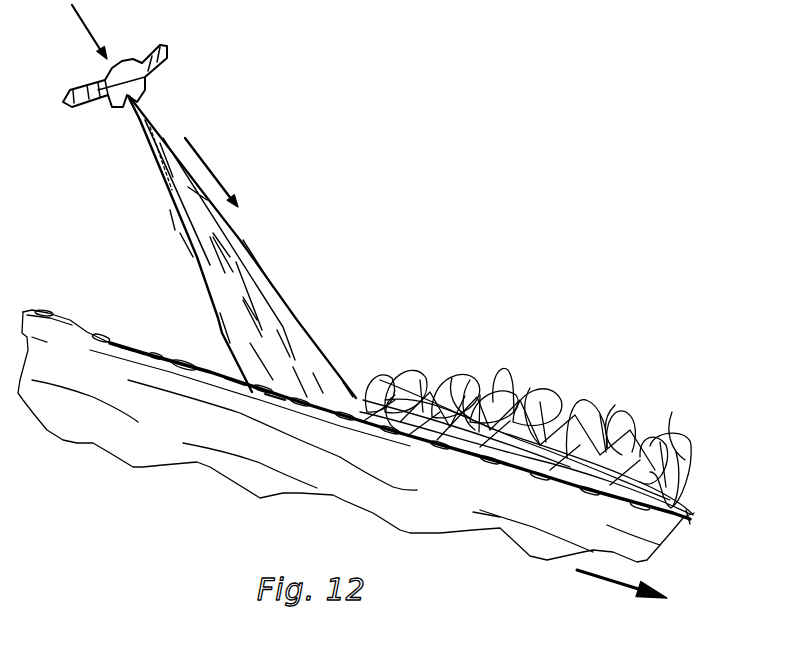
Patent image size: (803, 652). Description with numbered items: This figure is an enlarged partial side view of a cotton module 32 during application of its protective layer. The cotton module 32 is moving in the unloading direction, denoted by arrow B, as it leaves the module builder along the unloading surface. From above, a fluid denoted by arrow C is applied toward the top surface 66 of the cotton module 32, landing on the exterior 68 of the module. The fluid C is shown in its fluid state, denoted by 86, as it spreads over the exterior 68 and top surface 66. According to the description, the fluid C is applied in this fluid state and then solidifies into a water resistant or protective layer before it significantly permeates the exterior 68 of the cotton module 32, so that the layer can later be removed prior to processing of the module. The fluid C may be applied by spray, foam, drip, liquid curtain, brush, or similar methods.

The exterior 68 is at (133, 321).
The top surface 66 is at (198, 362).
The fluid state 86 is at (563, 377).
The cotton module 32 is at (672, 528).
The fluid C is at (208, 163).
The unloading direction B is at (610, 582).